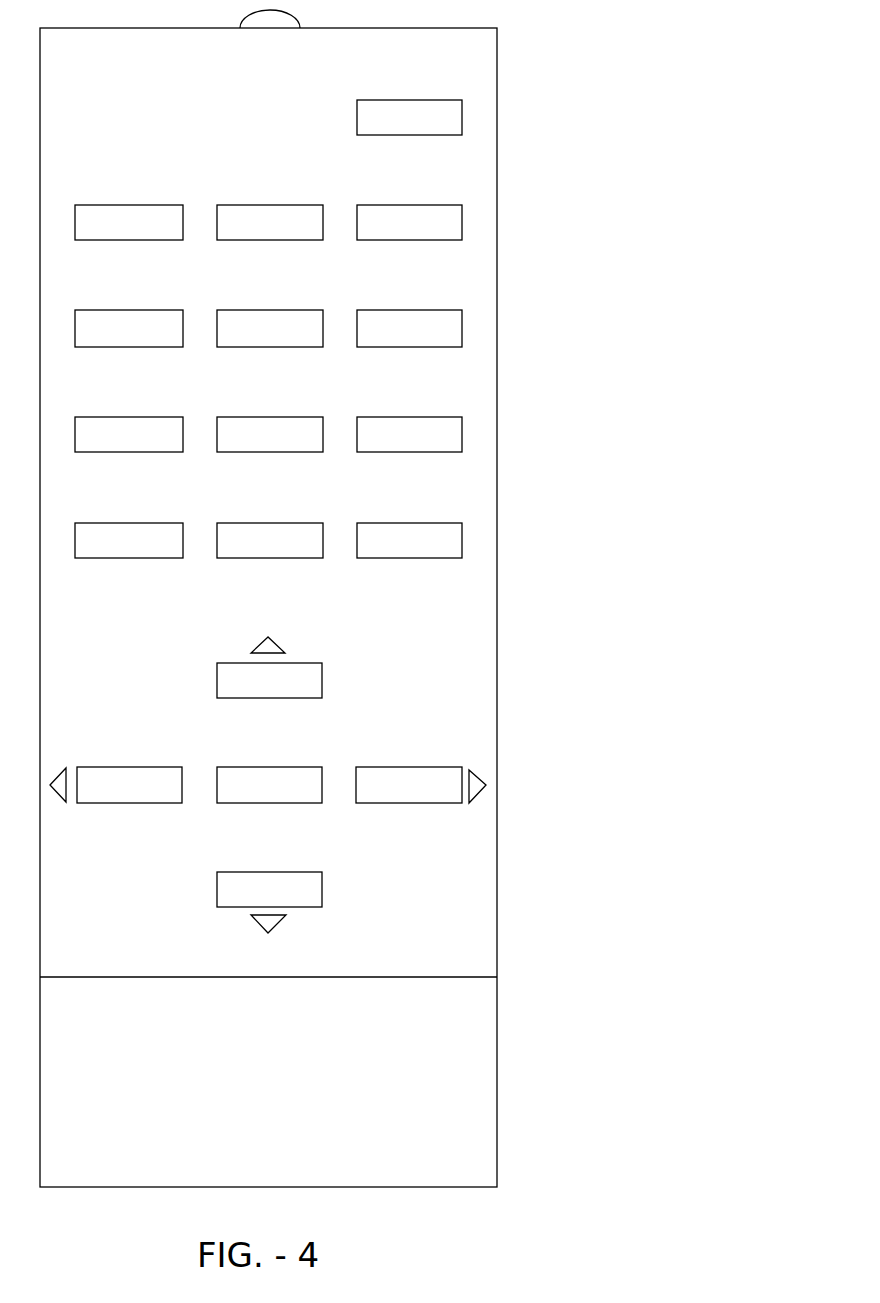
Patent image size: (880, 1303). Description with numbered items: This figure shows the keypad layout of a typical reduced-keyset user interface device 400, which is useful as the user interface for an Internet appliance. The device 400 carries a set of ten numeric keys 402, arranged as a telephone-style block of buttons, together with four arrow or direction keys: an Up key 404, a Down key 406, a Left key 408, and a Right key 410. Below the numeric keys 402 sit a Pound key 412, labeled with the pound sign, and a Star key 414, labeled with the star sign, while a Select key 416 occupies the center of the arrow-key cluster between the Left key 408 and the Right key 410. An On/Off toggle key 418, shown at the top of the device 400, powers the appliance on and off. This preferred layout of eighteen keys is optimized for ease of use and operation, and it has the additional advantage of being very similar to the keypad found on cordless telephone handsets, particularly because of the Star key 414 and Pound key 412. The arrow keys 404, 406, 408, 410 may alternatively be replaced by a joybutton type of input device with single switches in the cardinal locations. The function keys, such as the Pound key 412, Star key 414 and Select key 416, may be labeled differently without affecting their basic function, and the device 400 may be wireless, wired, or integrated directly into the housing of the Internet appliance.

The reduced-keyset user interface device 400 is at (566, 957).
The numeric keys 402 is at (352, 394).
The Up key 404 is at (312, 663).
The Down key 406 is at (240, 872).
The Left key 408 is at (88, 767).
The Right key 410 is at (375, 767).
The Pound key 412 is at (413, 567).
The Star key 414 is at (130, 558).
The Select key 416 is at (303, 803).
The On/Off toggle key 418 is at (462, 117).